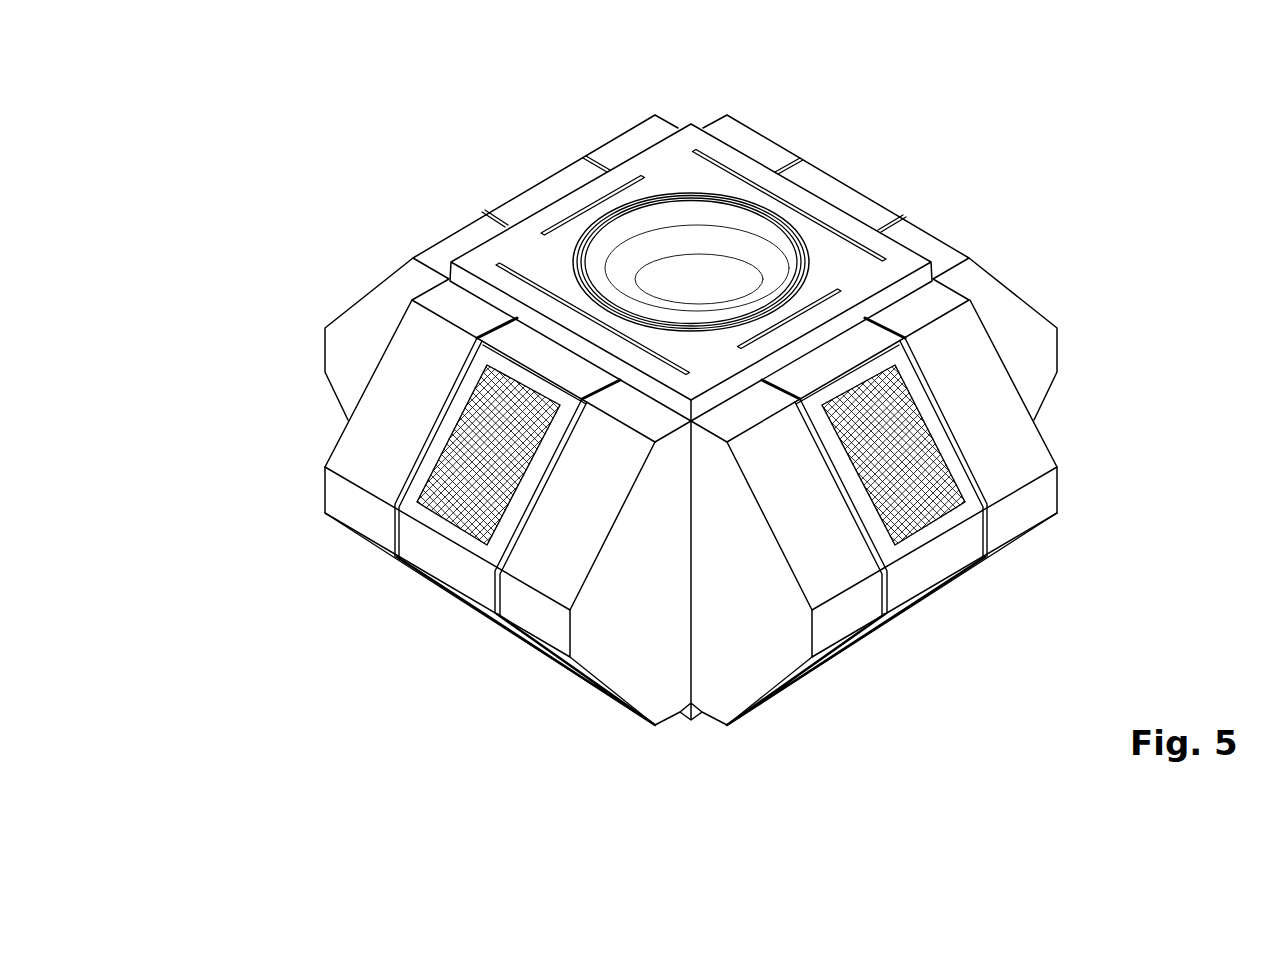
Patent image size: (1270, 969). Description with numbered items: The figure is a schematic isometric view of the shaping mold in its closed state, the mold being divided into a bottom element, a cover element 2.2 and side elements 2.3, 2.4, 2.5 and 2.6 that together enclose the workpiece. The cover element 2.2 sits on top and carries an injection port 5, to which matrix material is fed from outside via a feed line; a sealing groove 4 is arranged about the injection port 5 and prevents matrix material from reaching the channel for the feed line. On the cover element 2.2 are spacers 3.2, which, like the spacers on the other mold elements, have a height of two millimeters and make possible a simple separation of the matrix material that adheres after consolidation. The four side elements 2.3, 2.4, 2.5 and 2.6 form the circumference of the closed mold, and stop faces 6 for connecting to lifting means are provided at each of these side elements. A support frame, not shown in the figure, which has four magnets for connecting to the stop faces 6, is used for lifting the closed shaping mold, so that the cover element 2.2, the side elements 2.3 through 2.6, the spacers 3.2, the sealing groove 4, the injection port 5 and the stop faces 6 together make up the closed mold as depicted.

The cover element 2.2 is at (683, 172).
The side element 2.3 is at (1010, 460).
The side element 2.4 is at (1003, 300).
The side element 2.5 is at (355, 348).
The side element 2.6 is at (373, 478).
The spacer 3.2 is at (852, 238).
The sealing groove 4 is at (735, 195).
The injection port 5 is at (737, 272).
The stop face 6 is at (905, 487).